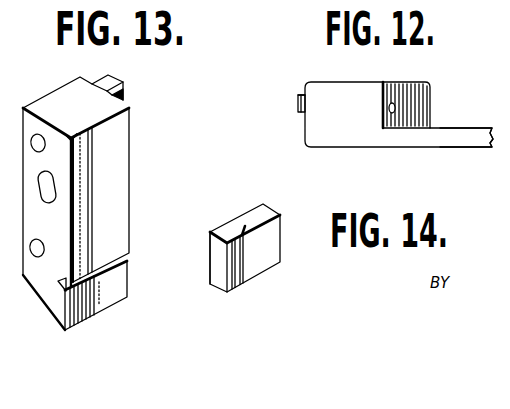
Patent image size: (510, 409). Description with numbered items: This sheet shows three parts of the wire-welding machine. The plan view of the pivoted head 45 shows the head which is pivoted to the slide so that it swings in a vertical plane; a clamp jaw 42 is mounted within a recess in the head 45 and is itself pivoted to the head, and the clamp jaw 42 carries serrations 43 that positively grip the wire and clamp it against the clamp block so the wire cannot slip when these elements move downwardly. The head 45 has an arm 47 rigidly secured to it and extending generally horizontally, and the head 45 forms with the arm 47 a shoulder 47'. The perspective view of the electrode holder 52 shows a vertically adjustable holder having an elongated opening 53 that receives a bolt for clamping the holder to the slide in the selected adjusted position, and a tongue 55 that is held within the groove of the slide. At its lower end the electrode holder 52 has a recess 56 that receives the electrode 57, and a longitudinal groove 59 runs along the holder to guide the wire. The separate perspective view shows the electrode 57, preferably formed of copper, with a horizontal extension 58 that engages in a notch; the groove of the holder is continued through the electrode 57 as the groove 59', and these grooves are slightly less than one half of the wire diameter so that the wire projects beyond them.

In FIG. 12, the clamp jaw 42 is at (300, 96).
In FIG. 12, the serrations 43 is at (297, 108).
In FIG. 12, the head 45 is at (340, 87).
In FIG. 12, the arm 47 is at (466, 122).
In FIG. 12, the shoulder 47' is at (432, 93).
In FIG. 13, the electrode holder 52 is at (125, 157).
In FIG. 13, the elongated opening 53 is at (55, 188).
In FIG. 13, the tongue 55 is at (123, 82).
In FIG. 13, the recess 56 is at (65, 291).
In FIG. 14, the electrode 57 is at (275, 225).
In FIG. 14, the horizontal extension 58 is at (210, 232).
In FIG. 13, the longitudinal groove 59 is at (130, 199).
In FIG. 14, the groove 59' is at (264, 265).